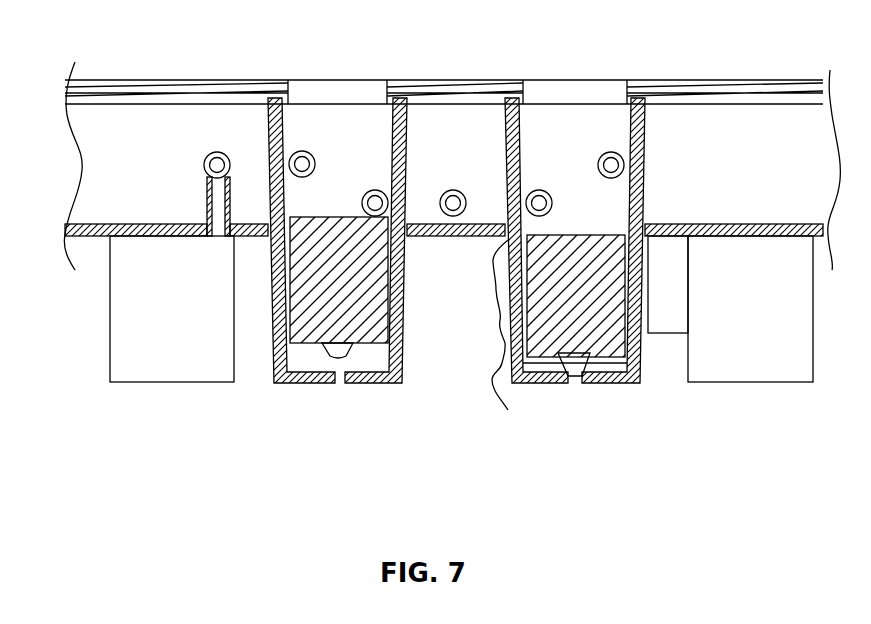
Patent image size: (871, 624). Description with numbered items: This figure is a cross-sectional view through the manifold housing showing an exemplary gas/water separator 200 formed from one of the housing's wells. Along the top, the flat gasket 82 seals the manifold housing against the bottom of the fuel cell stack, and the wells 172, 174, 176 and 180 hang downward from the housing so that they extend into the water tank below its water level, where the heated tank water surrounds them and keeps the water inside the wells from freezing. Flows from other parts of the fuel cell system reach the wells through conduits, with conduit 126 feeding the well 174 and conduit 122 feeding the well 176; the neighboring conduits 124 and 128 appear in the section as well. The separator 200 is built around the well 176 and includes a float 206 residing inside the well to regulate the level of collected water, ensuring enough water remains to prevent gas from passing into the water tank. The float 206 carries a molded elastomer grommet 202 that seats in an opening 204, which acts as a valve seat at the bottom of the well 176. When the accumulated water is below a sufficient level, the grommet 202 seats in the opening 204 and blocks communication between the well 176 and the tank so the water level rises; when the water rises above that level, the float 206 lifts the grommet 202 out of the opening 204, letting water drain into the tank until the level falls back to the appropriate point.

The flat gasket 82 is at (98, 236).
The conduit 122 is at (611, 152).
The tube 124 is at (456, 191).
The conduit 126 is at (376, 191).
The tube with stem 128 is at (214, 153).
The well 172 is at (132, 363).
The well 174 is at (277, 367).
The well 176 is at (538, 382).
The well 180 is at (737, 382).
The gas/water separator 200 is at (497, 327).
The molded elastomer grommet 202 is at (580, 374).
The opening 204 is at (575, 380).
The float 206 is at (614, 352).